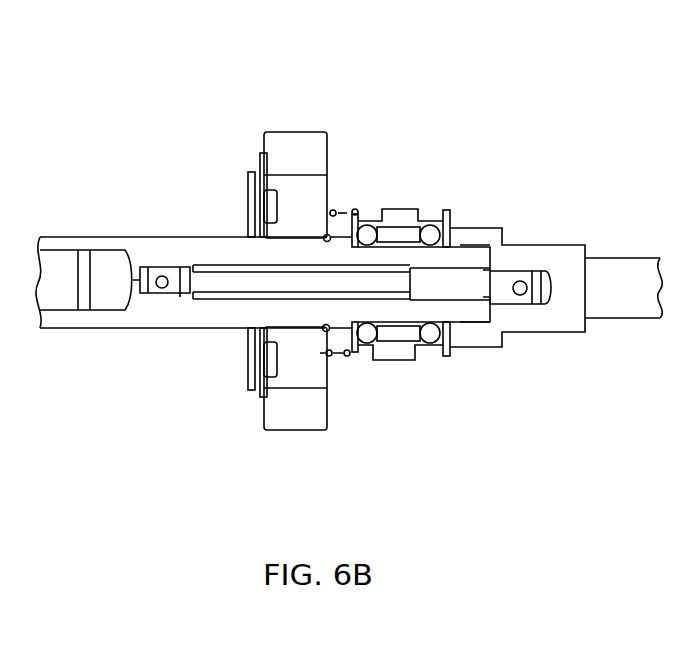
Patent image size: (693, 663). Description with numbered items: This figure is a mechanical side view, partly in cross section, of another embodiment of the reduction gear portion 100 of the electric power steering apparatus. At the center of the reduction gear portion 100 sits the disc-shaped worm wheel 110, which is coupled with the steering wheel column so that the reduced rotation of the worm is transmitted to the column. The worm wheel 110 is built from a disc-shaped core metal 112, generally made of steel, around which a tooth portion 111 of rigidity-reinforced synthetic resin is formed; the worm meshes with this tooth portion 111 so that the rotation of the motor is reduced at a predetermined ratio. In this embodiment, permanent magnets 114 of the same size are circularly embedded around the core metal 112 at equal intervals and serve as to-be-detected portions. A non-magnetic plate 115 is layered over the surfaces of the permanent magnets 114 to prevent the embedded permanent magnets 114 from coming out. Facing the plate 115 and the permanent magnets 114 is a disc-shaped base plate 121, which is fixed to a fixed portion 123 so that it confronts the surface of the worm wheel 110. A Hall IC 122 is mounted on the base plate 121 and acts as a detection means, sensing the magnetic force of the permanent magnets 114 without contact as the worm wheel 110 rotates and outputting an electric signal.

The reduction gear portion 100 is at (505, 73).
The worm wheel 110 is at (237, 446).
The tooth portion 111 is at (313, 144).
The core metal 112 is at (305, 372).
The permanent magnets 114 is at (272, 200).
The non-magnetic plate 115 is at (263, 197).
The base plate 121 is at (247, 200).
The Hall IC 122 is at (251, 172).
The fixed portion 123 is at (102, 235).